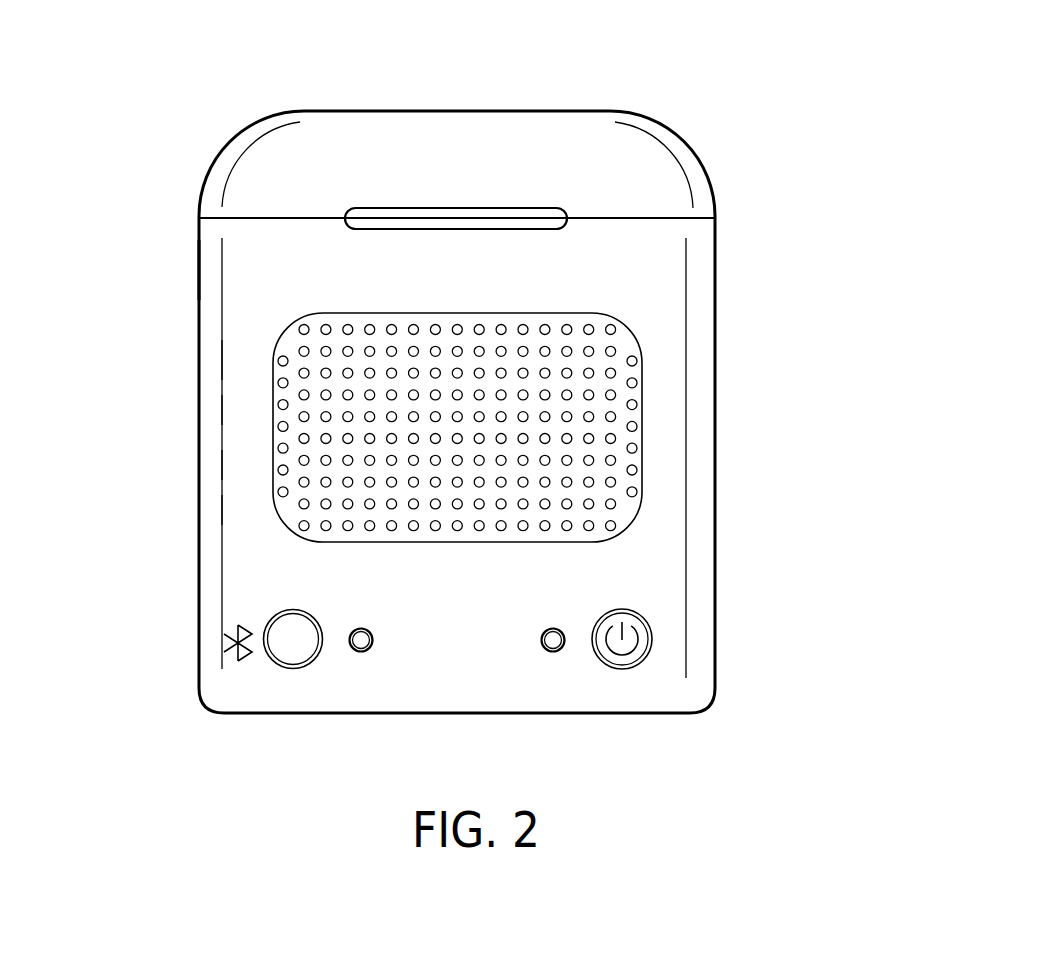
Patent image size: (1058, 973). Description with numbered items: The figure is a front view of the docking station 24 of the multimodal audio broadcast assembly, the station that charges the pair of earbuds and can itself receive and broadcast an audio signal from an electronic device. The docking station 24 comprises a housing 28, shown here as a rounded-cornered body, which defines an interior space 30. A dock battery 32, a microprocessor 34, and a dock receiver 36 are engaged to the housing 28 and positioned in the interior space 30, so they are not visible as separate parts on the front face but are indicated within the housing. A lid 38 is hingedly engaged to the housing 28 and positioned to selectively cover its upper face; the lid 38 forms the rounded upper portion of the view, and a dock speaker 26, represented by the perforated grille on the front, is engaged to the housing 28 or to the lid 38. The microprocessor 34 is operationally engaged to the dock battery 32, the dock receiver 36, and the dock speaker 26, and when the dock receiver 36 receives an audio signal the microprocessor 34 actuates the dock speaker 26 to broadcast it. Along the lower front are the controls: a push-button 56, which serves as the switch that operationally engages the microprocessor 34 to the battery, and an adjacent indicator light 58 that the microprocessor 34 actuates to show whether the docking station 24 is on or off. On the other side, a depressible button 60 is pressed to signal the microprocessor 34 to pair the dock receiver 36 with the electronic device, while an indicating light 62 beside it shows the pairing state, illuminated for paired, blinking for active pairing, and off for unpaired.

The docking station 24 is at (720, 275).
The dock speaker 26 is at (600, 389).
The housing 28 is at (190, 272).
The interior space 30 is at (246, 361).
The dock battery 32 is at (245, 408).
The microprocessor 34 is at (245, 465).
The dock receiver 36 is at (232, 512).
The lid 38 is at (648, 158).
The push-button 56 is at (647, 612).
The indicator light 58 is at (554, 656).
The button 60 is at (279, 670).
The indicating light 62 is at (358, 665).